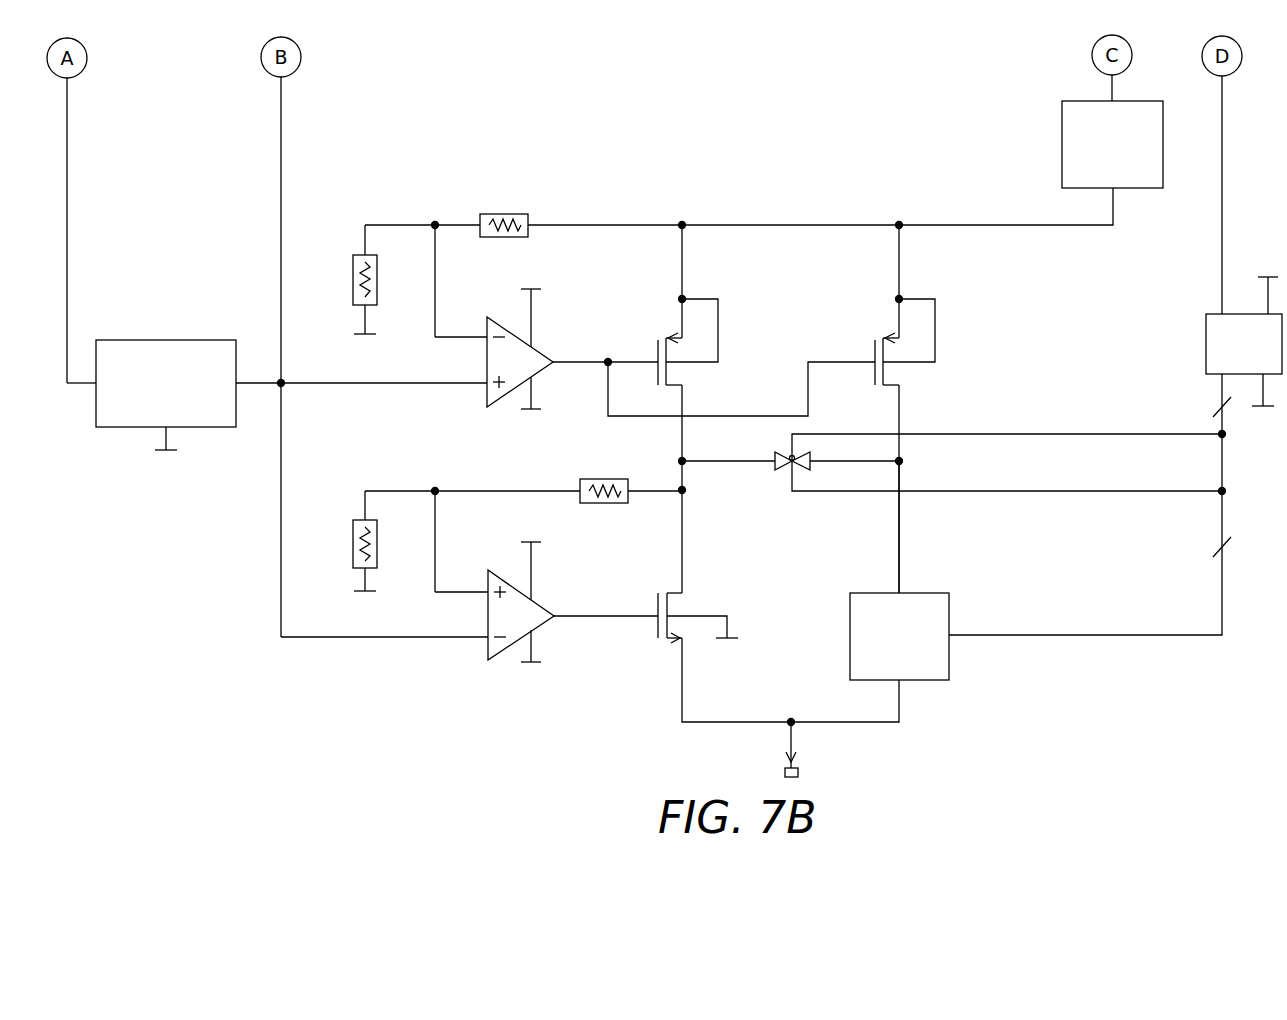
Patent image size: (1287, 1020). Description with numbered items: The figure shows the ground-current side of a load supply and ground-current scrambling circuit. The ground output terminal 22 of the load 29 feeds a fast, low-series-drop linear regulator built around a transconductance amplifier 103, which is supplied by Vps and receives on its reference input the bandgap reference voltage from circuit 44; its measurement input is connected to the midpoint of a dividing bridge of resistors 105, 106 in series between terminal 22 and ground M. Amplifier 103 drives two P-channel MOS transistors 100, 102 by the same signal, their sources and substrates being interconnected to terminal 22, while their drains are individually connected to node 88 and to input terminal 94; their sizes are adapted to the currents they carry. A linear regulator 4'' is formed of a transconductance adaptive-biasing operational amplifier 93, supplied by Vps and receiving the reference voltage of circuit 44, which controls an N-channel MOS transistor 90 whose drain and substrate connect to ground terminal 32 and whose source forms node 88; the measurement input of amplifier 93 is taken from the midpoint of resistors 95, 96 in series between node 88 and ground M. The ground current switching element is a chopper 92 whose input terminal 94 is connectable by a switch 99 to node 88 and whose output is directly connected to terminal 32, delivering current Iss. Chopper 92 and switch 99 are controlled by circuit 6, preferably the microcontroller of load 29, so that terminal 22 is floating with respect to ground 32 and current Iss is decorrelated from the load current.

The bandgap reference voltage generation circuit 44 is at (157, 340).
The resistor 106 is at (357, 255).
The resistor 105 is at (513, 214).
The transconductance amplifier 103 is at (487, 400).
The P-channel MOS transistor 100 is at (672, 336).
The P-channel MOS transistor 102 is at (888, 338).
The node 88 is at (685, 492).
The switch 99 is at (775, 455).
The input terminal of chopper 94 is at (899, 542).
The resistor 95 is at (603, 503).
The resistor 96 is at (357, 520).
The linear regulator 4'' is at (374, 454).
The transconductance adaptive-biasing operational amplifier 93 is at (540, 598).
The N-channel MOS transistor 90 is at (665, 638).
The chopper 92 is at (949, 593).
The ground terminal 32 is at (800, 768).
The load 29 is at (1075, 101).
The ground output terminal of load 22 is at (1080, 225).
The control circuit 6 is at (1208, 314).